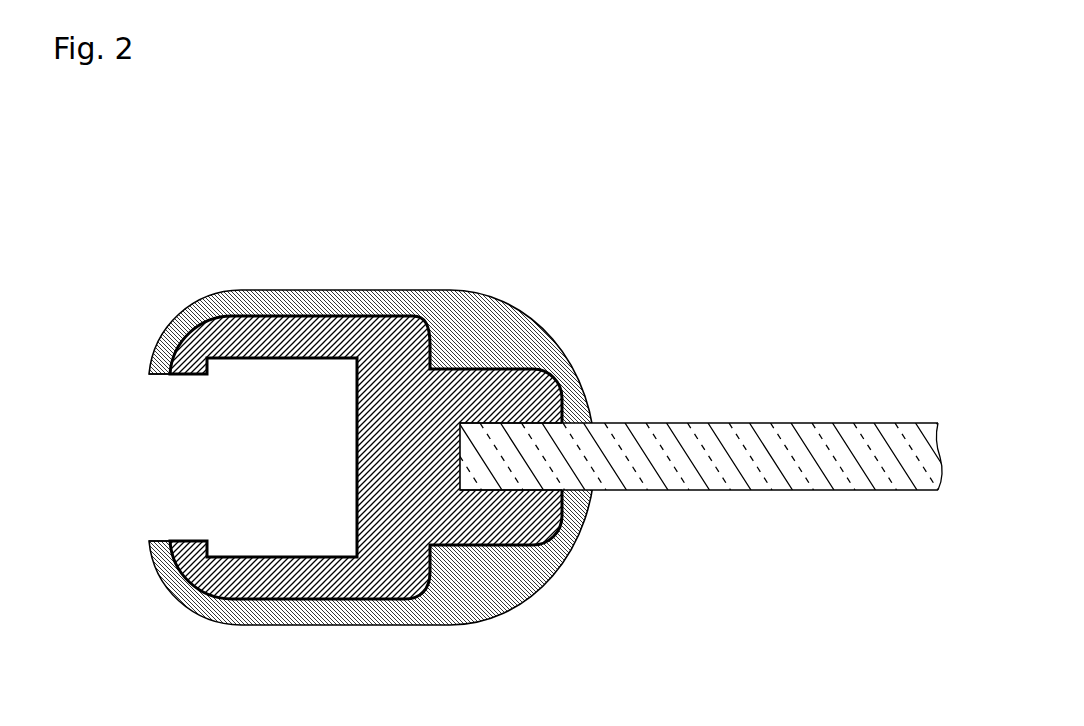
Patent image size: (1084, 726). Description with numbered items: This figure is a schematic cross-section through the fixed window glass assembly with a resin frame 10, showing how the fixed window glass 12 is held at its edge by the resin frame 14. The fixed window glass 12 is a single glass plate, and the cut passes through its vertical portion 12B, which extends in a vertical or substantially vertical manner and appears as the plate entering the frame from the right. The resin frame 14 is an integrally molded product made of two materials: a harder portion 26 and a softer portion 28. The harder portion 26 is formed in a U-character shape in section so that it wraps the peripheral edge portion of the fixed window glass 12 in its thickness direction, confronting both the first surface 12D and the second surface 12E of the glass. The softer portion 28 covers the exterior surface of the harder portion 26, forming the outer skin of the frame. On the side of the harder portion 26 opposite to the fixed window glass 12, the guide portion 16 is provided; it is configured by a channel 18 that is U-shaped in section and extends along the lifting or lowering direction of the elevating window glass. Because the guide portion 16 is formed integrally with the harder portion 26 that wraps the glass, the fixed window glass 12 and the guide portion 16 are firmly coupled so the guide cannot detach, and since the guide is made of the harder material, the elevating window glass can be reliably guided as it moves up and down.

The fixed window glass assembly with a resin frame 10 is at (535, 380).
The fixed window glass 12 is at (632, 449).
The vertical portion 12B is at (458, 462).
The first surface 12D is at (742, 492).
The second surface 12E is at (713, 423).
The resin frame 14 is at (343, 422).
The guide portion 16 is at (138, 453).
The channel 18 is at (247, 468).
The harder portion 26 is at (357, 412).
The softer portion 28 is at (531, 330).